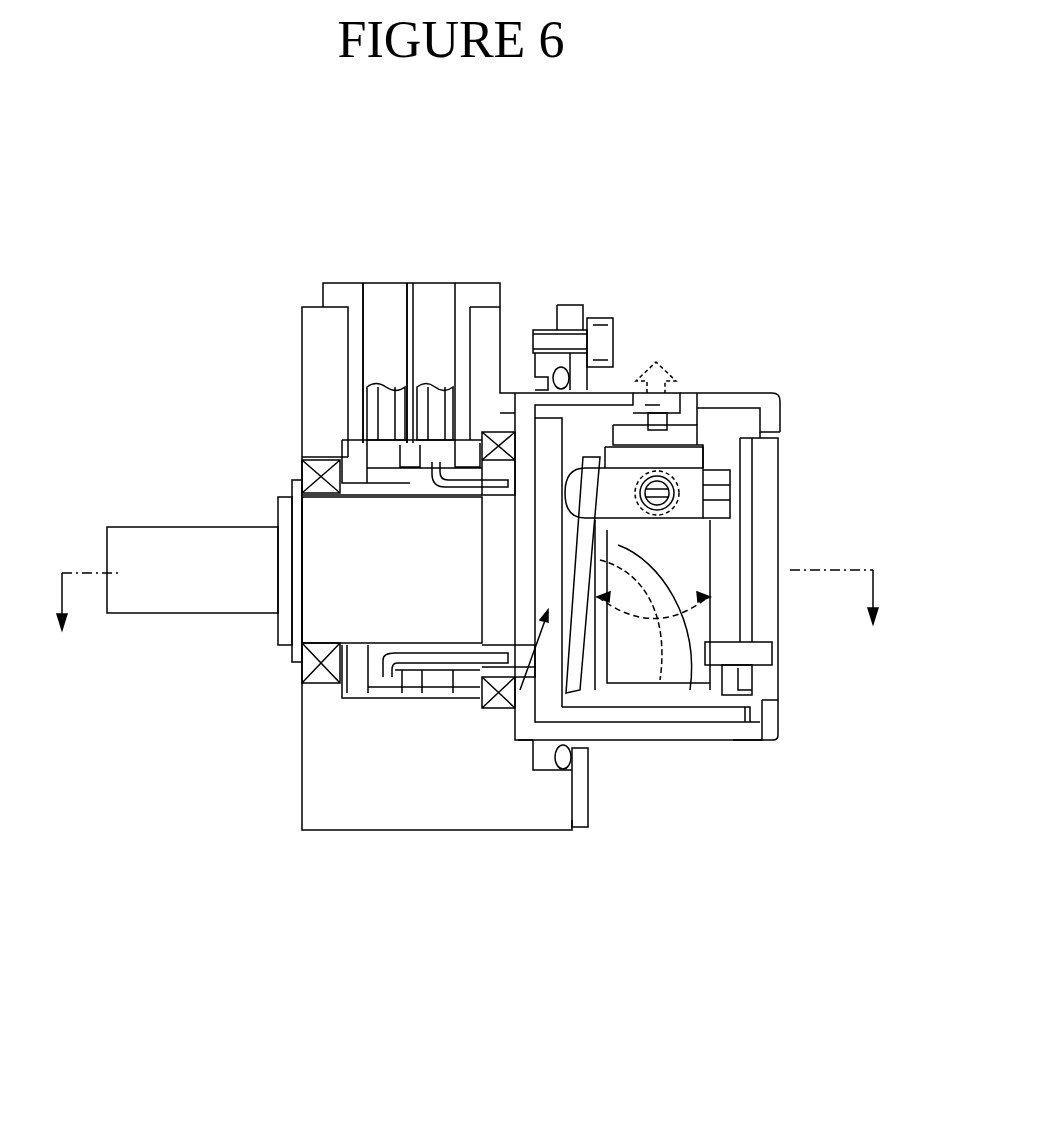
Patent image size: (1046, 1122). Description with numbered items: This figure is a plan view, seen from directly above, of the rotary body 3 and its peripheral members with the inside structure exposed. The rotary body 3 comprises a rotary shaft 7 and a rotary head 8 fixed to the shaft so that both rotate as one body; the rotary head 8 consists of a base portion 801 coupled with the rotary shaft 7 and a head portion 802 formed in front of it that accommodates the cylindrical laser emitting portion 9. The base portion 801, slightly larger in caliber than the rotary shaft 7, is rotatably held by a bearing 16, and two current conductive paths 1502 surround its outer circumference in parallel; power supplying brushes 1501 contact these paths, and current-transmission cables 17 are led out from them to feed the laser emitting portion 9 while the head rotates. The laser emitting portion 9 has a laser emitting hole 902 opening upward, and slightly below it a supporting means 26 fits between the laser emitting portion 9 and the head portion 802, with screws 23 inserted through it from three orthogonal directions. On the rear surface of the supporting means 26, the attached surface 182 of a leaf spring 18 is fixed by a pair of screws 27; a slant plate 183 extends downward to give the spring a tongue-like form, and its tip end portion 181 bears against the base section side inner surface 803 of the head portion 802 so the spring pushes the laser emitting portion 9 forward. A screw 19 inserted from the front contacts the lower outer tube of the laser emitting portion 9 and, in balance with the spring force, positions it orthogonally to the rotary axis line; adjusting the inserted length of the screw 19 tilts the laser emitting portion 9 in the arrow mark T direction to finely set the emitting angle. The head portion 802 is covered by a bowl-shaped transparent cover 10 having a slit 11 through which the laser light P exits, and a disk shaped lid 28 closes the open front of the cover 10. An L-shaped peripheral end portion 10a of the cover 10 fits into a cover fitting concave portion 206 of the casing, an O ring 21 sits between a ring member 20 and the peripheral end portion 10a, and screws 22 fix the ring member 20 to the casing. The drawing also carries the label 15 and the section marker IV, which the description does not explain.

The rotary body 3 is at (772, 391).
The rotary shaft 7 is at (200, 580).
The rotary head 8 is at (510, 712).
The laser emitting portion 9 is at (688, 558).
The cover 10 is at (673, 730).
The peripheral end portion 10a is at (576, 352).
The slit 11 is at (673, 430).
The stator 15 is at (433, 306).
The bearing 16 is at (488, 430).
The current-transmission cable 17 is at (572, 466).
The leaf spring 18 is at (572, 673).
The screw 19 is at (763, 650).
The ring member 20 is at (575, 330).
The O ring 21 is at (600, 345).
The screw 22 is at (617, 330).
The screw 23 is at (746, 500).
The supporting means 26 is at (700, 513).
The screw 27 is at (763, 452).
The disk shaped lid 28 is at (700, 512).
The tip end portion 181 is at (577, 680).
The attached surface 182 is at (640, 505).
The slant plate 183 is at (595, 655).
The cover fitting concave portion 206 is at (512, 460).
The base portion 801 is at (342, 537).
The head portion 802 is at (528, 738).
The base section side inner surface 803 is at (702, 718).
The laser emitting hole 902 is at (768, 387).
The power supplying brush 1501 is at (382, 400).
The current conductive path 1502 is at (440, 680).
The laser light P is at (668, 368).
The arrow mark T direction T is at (665, 580).
The section IV is at (467, 617).